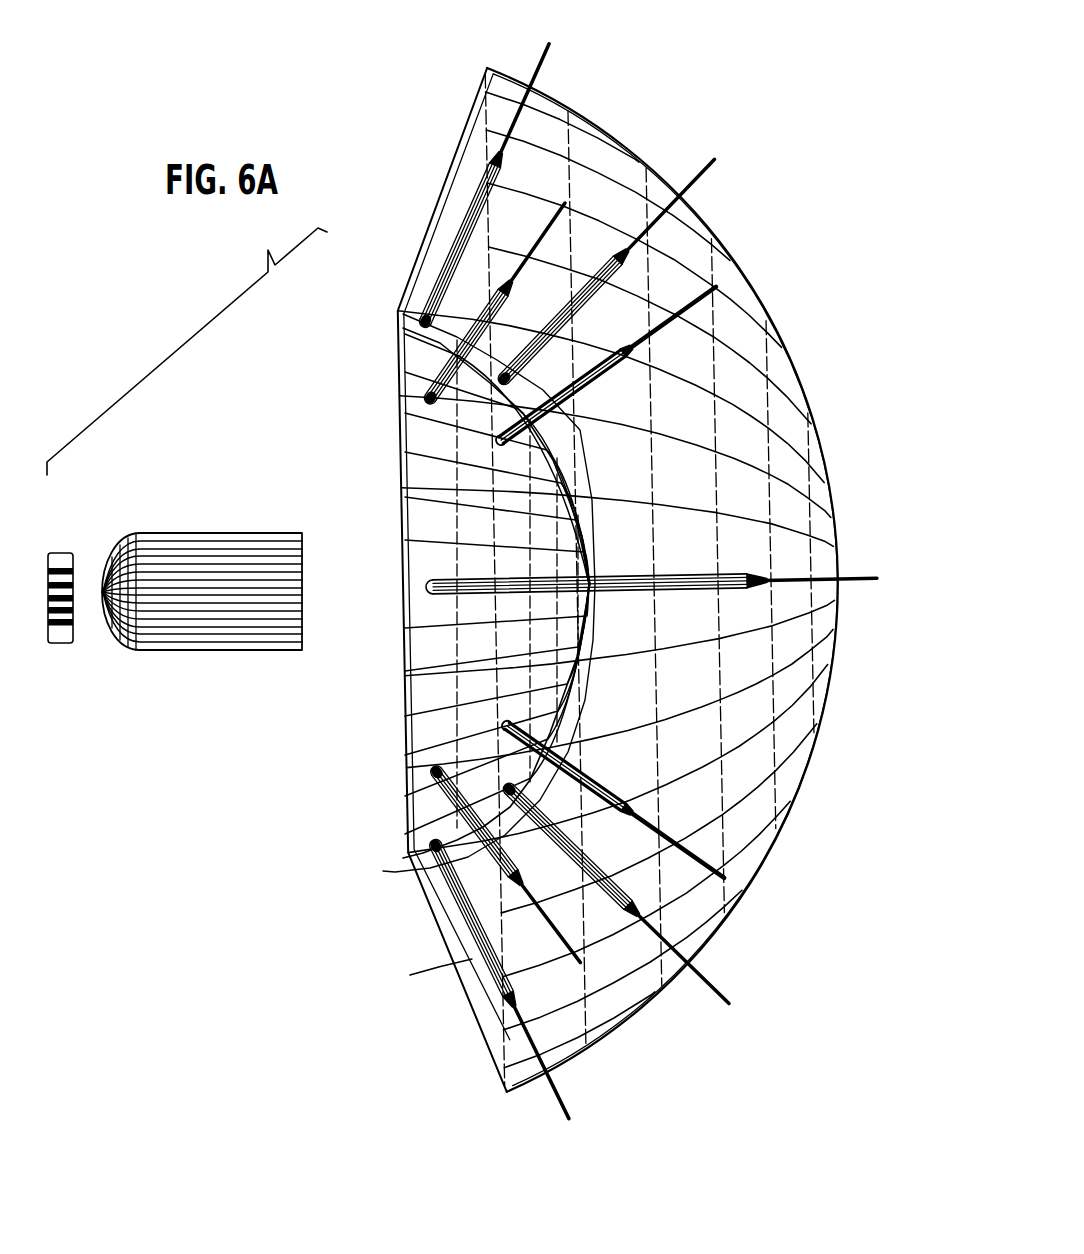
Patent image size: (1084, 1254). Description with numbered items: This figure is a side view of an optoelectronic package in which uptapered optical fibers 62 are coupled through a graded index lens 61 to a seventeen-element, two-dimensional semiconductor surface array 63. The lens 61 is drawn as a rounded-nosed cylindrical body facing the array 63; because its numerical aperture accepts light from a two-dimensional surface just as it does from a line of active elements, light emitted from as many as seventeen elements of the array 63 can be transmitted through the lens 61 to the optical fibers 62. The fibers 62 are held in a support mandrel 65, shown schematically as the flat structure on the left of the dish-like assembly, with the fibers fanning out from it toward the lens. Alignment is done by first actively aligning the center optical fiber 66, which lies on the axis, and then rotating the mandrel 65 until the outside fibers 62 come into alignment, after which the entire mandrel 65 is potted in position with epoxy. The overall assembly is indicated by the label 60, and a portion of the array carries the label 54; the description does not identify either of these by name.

The antenna assembly 60 is at (362, 410).
The graded index lens 61 is at (206, 652).
The uptapered optical fibers 62 is at (448, 888).
The two-dimensional surface array 63 is at (57, 552).
The conductive ring 54 is at (75, 571).
The support mandrel 65 is at (453, 967).
The center optical fiber 66 is at (850, 578).